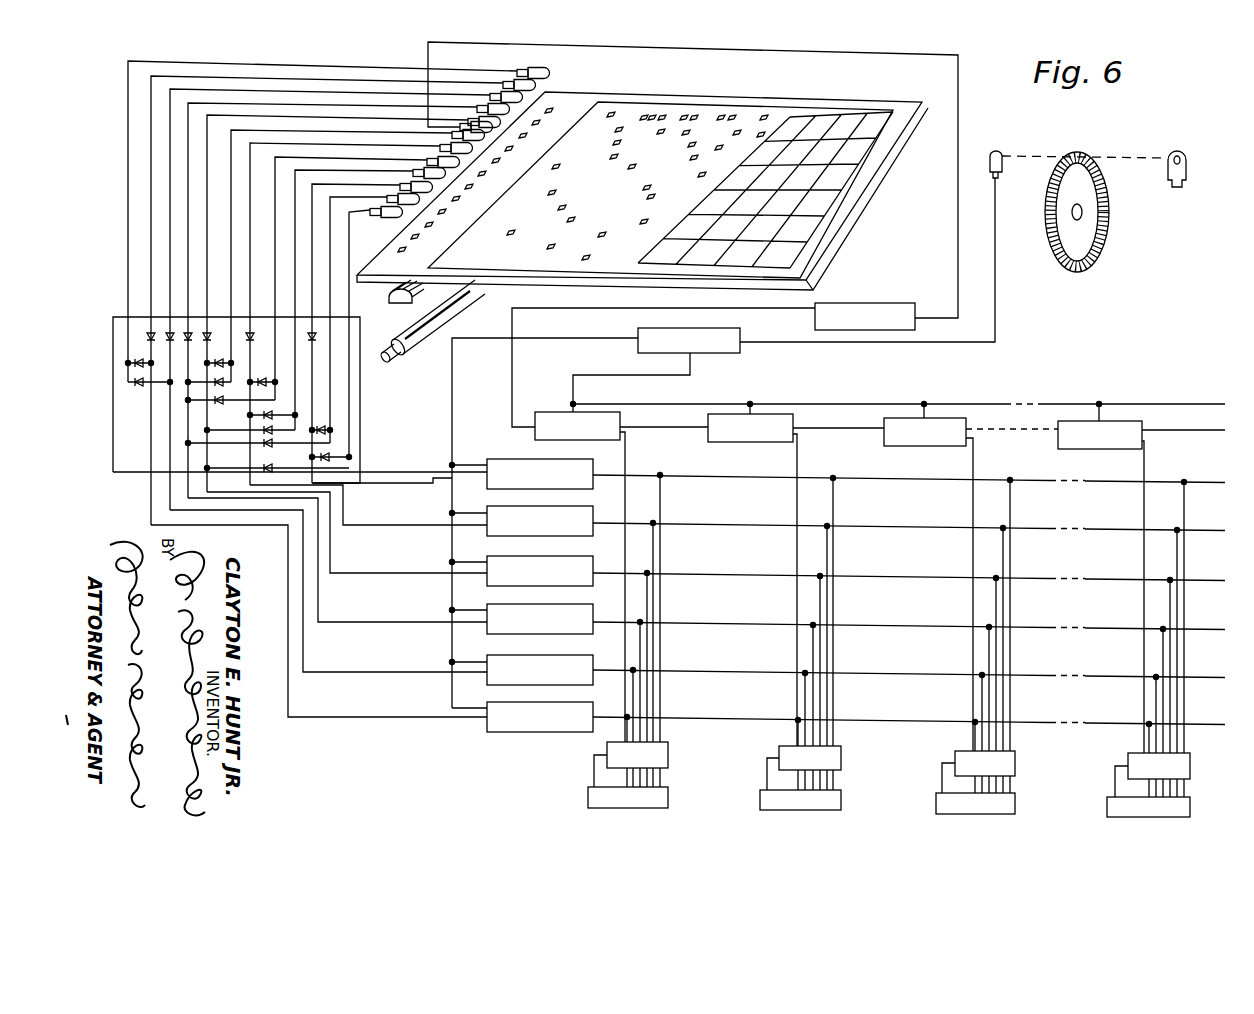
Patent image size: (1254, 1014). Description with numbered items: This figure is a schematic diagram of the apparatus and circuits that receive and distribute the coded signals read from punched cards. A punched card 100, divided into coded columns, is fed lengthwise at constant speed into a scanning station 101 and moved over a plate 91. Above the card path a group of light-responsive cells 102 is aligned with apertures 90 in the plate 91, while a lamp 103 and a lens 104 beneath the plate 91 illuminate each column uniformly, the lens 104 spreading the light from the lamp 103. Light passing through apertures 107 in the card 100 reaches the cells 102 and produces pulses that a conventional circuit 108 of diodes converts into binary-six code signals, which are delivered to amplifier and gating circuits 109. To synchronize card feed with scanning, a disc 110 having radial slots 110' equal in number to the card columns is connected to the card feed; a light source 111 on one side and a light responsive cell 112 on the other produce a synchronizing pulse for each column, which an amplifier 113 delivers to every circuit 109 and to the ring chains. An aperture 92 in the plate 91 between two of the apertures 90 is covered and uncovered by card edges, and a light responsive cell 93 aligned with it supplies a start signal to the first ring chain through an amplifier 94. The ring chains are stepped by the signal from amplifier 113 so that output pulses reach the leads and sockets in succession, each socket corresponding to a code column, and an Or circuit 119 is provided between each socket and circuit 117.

The apertures 90 is at (428, 227).
The plate 91 is at (628, 288).
The aperture 92 is at (490, 168).
The light responsive cell 93 is at (487, 130).
The amplifier 94 is at (853, 304).
The punched card 100 is at (767, 118).
The scanning station 101 is at (322, 190).
The light-responsive cells 102 is at (537, 87).
The lamp 103 is at (442, 315).
The lens 104 is at (388, 298).
The apertures 107 is at (637, 182).
The circuit of diodes 108 is at (360, 382).
The amplifier and gating circuits 109 is at (577, 702).
The disc 110 is at (1105, 212).
The radial slots 110' is at (1089, 194).
The light source 111 is at (1187, 170).
The light responsive cell 112 is at (998, 152).
The amplifier 113 is at (690, 353).
The circuit 117 is at (438, 468).
The Or circuit 119 is at (1190, 764).